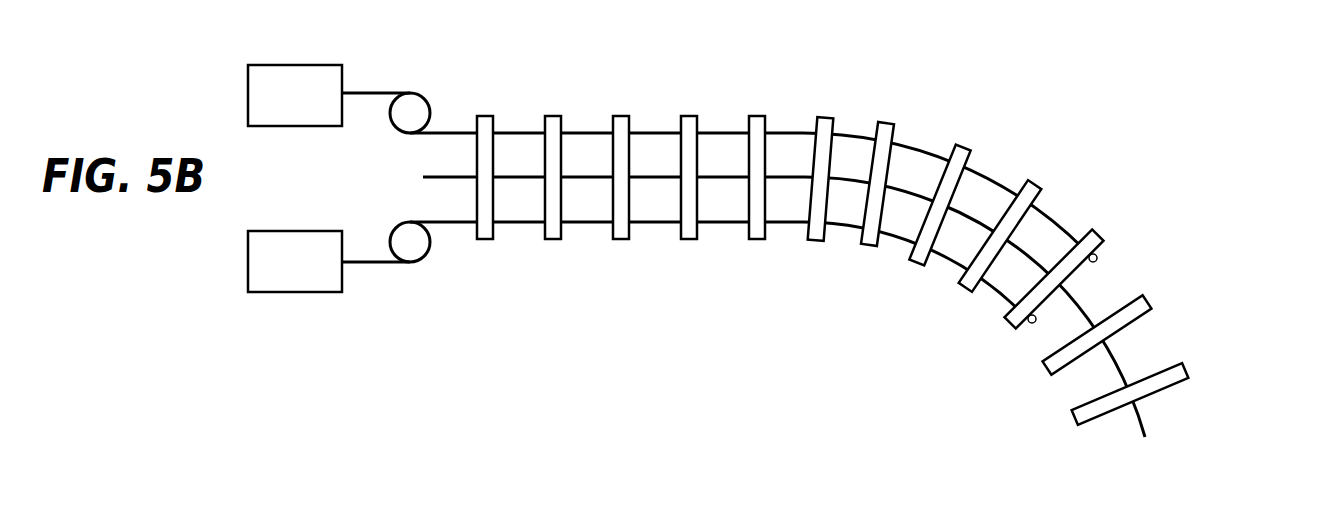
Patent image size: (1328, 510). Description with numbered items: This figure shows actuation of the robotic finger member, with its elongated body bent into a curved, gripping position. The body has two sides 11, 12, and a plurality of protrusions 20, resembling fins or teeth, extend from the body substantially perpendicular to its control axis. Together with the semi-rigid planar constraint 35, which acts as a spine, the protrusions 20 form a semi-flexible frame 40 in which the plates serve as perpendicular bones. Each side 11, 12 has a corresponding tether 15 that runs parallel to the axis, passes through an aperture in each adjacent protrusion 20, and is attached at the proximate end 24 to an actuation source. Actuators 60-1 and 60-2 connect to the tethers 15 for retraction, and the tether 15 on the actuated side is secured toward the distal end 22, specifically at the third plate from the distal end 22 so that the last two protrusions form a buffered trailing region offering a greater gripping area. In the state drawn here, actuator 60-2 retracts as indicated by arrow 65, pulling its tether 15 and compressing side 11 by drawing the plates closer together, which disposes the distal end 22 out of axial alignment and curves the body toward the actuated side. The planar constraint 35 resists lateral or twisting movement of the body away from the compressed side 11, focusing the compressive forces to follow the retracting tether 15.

The actuator 60-1 is at (268, 111).
The actuator 60-2 is at (268, 280).
The arrow 65 is at (371, 252).
The tether 15 is at (588, 130).
The semi-flexible frame 40 is at (690, 254).
The proximate end 24 is at (500, 88).
The protrusions 20 is at (887, 122).
The distal end 22 is at (1187, 330).
The side 12 is at (1210, 356).
The side 11 is at (1028, 400).
The constraint 35 is at (1144, 429).